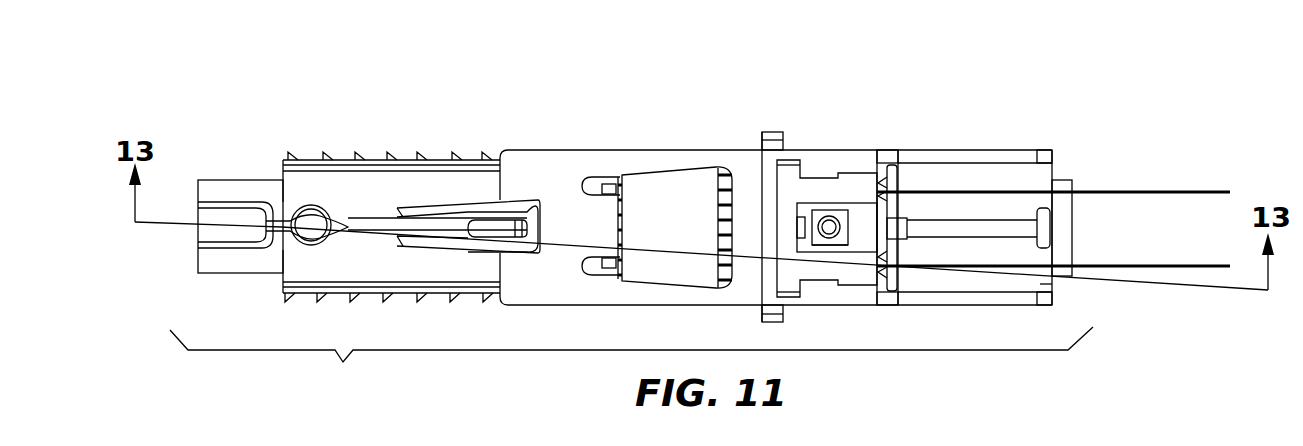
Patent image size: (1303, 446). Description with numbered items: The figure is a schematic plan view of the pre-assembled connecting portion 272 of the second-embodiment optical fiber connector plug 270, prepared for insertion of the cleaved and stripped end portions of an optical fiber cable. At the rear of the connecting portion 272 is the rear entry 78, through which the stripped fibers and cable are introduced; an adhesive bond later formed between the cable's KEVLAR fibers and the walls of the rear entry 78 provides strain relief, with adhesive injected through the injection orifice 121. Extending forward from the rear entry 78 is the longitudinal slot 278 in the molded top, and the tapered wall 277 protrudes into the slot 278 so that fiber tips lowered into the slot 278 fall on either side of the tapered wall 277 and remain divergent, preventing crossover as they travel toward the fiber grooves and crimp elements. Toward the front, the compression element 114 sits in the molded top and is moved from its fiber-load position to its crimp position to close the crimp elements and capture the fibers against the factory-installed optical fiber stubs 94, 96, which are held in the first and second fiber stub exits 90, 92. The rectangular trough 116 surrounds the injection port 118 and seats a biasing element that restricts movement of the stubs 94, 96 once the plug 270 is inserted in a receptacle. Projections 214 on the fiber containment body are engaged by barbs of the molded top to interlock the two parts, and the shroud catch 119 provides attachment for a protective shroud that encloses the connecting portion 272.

The rear entry 78 is at (210, 232).
The first fiber stub exit 90 is at (1013, 175).
The second fiber stub exit 92 is at (1045, 286).
The optical fiber stub 94 is at (1138, 190).
The optical fiber stub 96 is at (1138, 265).
The compression element 114 is at (665, 188).
The rectangular trough 116 is at (815, 187).
The injection port 118 is at (832, 224).
The shroud catch 119 is at (845, 248).
The injection orifice 121 is at (311, 205).
The projections 214 is at (773, 131).
The optical fiber connector plug 270 is at (718, 120).
The connecting portion 272 is at (631, 274).
The tapered wall 277 is at (498, 226).
The longitudinal slot 278 is at (421, 228).